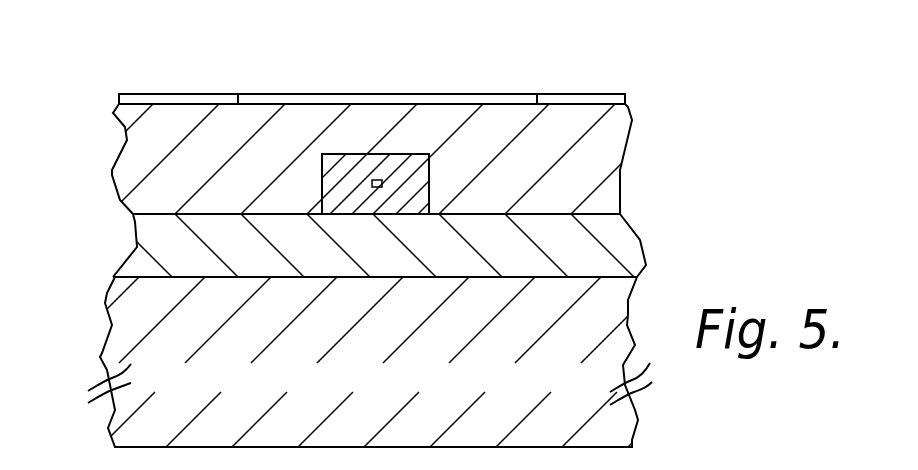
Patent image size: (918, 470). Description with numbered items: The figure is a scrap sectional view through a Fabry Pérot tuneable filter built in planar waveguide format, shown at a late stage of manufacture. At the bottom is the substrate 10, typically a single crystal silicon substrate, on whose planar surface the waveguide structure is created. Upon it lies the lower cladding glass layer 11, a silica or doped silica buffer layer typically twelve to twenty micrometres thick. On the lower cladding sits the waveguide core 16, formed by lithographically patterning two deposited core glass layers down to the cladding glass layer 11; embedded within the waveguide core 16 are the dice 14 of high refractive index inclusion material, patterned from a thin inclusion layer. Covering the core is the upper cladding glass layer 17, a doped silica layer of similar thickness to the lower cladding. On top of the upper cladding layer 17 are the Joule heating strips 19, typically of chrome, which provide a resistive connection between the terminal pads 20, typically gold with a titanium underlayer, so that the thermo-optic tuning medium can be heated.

The substrate 10 is at (162, 350).
The lower cladding glass layer 11 is at (172, 250).
The dice of inclusion layer material 14 is at (431, 156).
The waveguide core 16 is at (352, 177).
The upper cladding glass layer 17 is at (585, 158).
The Joule heating strips 19 is at (338, 100).
The terminal pads 20 is at (197, 100).